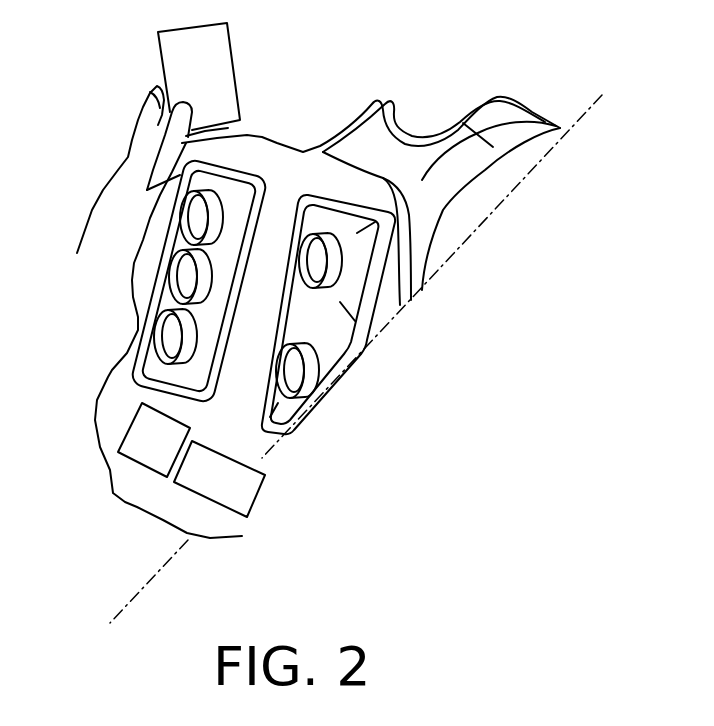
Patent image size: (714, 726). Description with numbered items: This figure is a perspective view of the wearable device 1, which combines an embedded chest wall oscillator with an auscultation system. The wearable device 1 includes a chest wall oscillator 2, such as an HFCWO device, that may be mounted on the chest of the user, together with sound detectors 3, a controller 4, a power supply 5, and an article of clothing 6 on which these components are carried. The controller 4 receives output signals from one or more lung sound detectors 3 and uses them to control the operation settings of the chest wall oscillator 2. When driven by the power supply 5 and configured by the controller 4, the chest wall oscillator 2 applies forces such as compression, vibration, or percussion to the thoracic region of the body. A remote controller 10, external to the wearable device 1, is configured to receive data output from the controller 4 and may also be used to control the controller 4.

The wearable device 1 is at (538, 104).
The chest wall oscillator 2 is at (330, 213).
The sound detector 3 is at (195, 213).
The controller 4 is at (143, 432).
The power supply 5 is at (235, 490).
The article of clothing 6 is at (437, 190).
The remote controller 10 is at (180, 58).